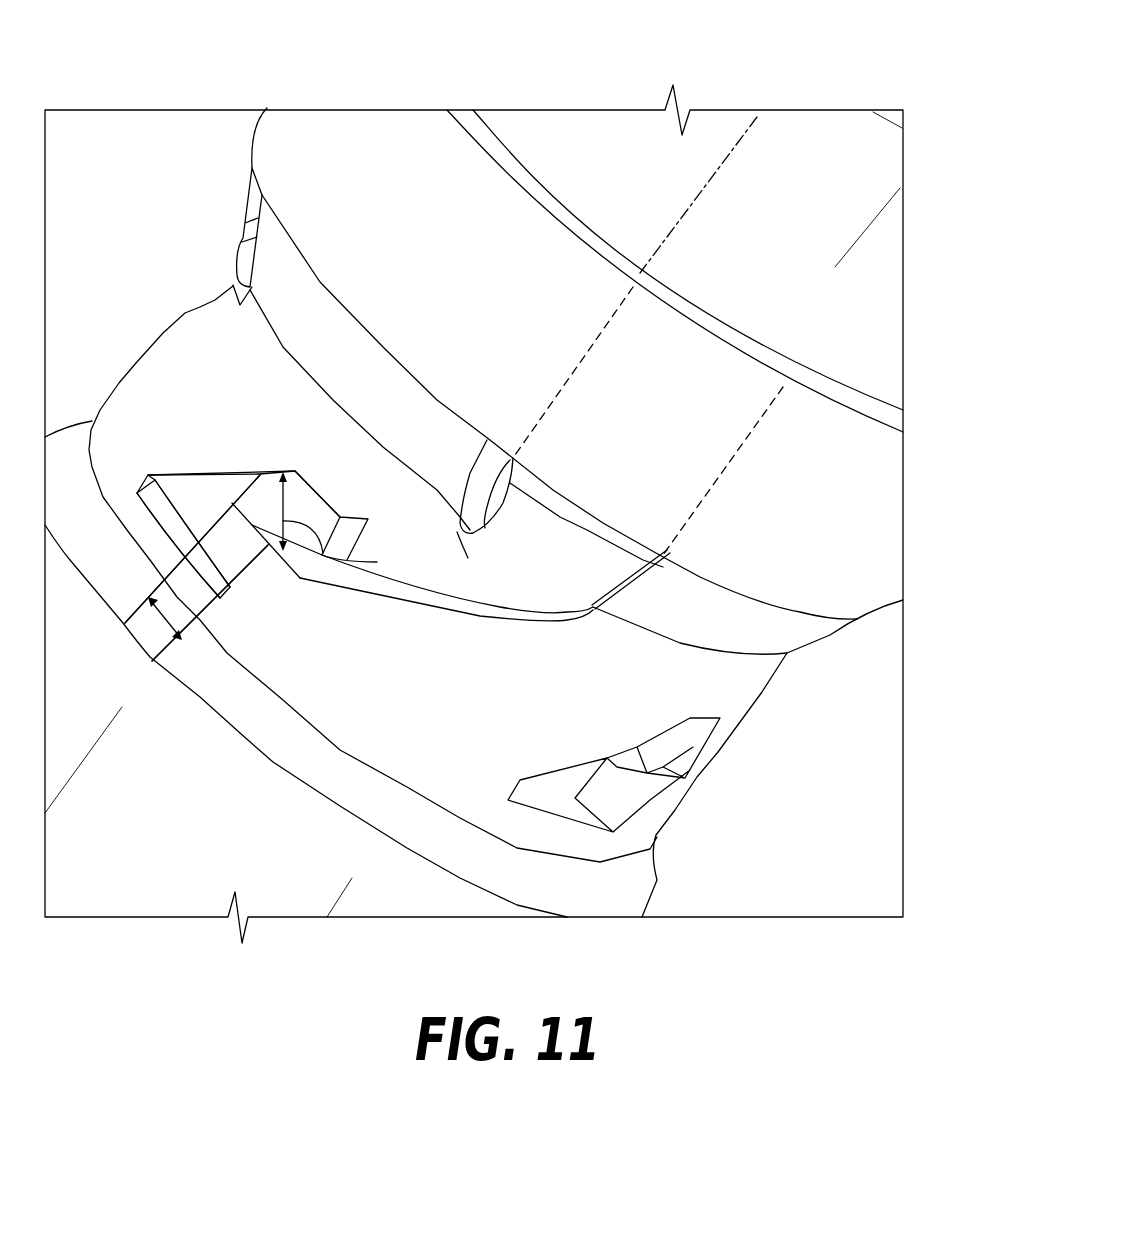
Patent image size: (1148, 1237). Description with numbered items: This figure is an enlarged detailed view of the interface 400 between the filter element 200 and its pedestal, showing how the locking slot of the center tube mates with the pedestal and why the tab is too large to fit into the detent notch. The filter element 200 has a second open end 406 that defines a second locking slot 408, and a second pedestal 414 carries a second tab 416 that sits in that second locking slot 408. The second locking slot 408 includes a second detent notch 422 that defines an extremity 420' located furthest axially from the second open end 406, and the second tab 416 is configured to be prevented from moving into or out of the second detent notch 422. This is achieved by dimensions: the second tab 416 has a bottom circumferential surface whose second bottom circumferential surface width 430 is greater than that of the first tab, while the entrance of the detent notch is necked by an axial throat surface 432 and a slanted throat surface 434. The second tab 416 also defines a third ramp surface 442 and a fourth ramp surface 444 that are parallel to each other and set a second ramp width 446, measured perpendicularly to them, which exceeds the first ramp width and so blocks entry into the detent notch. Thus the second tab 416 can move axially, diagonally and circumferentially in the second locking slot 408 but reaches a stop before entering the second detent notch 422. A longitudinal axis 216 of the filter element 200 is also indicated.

The interface 400 is at (808, 87).
The filter element 200 is at (911, 538).
The longitudinal axis 216 is at (740, 133).
The second open end 406 is at (642, 273).
The second locking slot 408 is at (487, 440).
The second pedestal 414 is at (598, 577).
The second tab 416 is at (283, 478).
The extremity 420' is at (251, 587).
The second detent notch 422 is at (225, 565).
The second bottom circumferential surface width 430 is at (234, 508).
The axial throat surface 432 is at (232, 550).
The slanted throat surface 434 is at (218, 474).
The third ramp surface 442 is at (261, 478).
The fourth ramp surface 444 is at (303, 563).
The second ramp width 446 is at (323, 553).